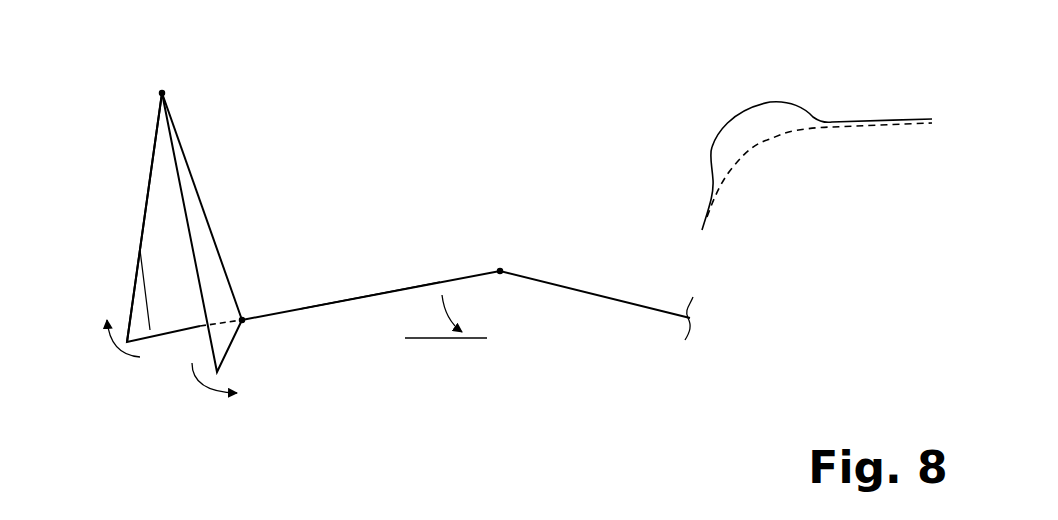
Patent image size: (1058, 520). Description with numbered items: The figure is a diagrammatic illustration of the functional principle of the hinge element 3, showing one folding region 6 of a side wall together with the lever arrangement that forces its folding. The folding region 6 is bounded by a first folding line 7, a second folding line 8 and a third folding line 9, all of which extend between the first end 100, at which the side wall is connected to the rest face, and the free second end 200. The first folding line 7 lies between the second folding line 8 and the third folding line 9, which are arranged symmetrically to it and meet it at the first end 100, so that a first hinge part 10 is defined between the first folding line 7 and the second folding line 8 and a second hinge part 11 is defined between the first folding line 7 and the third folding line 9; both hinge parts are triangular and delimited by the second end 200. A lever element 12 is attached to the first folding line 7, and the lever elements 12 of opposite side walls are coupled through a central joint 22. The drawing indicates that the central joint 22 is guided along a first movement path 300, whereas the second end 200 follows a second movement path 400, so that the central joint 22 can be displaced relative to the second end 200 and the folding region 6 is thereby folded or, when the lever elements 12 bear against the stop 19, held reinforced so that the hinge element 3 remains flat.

The hinge element 3 is at (332, 328).
The folding region 6 is at (142, 210).
The first folding line 7 is at (200, 197).
The second folding line 8 is at (140, 248).
The third folding line 9 is at (207, 342).
The first hinge part 10 is at (165, 290).
The second hinge part 11 is at (213, 282).
The lever element 12 is at (422, 288).
The stop 19 is at (443, 340).
The central joint 22 is at (502, 275).
The first end 100 is at (158, 82).
The second end 200 is at (187, 385).
The first movement path 300 is at (717, 125).
The second movement path 400 is at (790, 135).